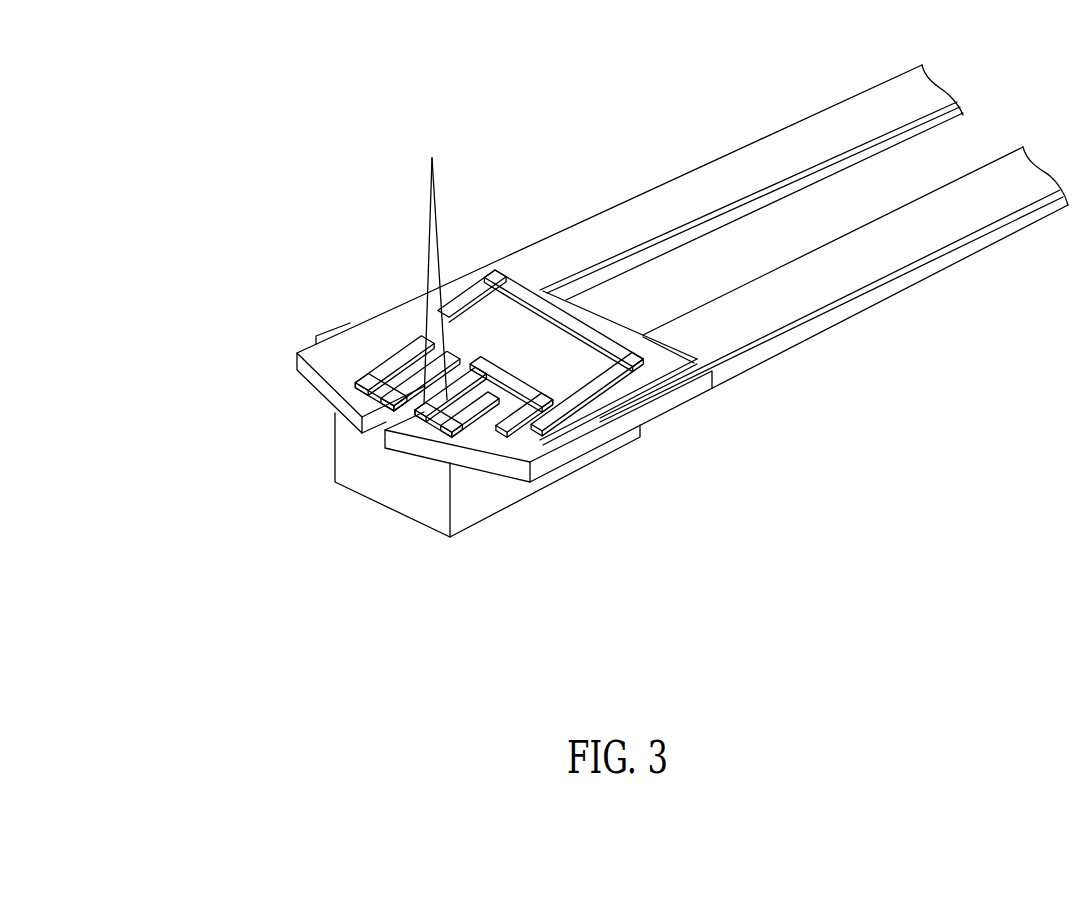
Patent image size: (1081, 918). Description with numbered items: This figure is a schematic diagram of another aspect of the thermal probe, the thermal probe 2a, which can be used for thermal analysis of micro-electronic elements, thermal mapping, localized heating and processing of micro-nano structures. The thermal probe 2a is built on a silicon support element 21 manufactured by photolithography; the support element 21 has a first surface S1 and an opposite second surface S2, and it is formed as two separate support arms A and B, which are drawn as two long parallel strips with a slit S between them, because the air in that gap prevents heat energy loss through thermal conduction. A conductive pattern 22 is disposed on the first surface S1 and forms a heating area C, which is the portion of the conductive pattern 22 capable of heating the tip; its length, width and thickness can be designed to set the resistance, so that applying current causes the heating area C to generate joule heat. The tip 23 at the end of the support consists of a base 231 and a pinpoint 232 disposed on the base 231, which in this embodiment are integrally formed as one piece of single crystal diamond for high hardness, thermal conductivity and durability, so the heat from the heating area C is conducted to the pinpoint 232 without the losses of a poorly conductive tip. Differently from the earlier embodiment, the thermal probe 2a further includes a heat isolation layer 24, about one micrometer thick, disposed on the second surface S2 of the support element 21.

The thermal probe 2a is at (232, 90).
The support element 21 is at (735, 363).
The conductive pattern 22 is at (665, 202).
The tip 23 is at (186, 250).
The base 231 is at (347, 452).
The pinpoint 232 is at (433, 215).
The heat isolation layer 24 is at (652, 420).
The support arm A is at (772, 153).
The support arm B is at (886, 268).
The heating area C is at (378, 358).
The slit S is at (414, 385).
The first surface S1 is at (318, 363).
The second surface S2 is at (460, 463).